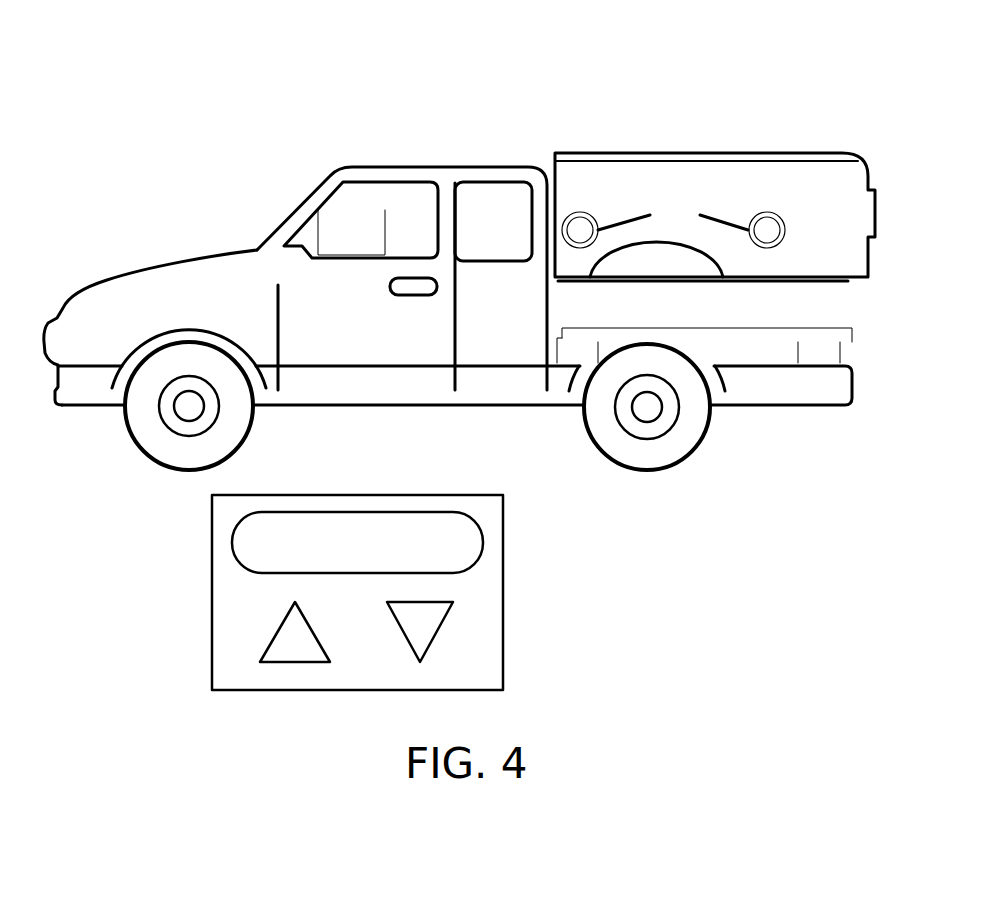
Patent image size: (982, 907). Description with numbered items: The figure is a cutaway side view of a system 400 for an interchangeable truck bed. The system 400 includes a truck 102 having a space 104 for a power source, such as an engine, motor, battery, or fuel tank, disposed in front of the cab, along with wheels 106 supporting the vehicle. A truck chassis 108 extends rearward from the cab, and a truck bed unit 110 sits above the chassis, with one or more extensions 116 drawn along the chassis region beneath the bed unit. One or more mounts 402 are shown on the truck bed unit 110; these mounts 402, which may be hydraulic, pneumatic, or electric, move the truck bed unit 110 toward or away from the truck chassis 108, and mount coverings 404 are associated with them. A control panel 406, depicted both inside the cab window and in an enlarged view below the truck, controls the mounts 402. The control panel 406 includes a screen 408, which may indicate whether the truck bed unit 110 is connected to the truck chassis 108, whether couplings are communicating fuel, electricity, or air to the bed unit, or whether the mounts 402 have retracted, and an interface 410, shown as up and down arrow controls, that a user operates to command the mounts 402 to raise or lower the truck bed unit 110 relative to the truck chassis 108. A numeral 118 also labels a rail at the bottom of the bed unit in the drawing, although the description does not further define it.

The system 400 is at (126, 68).
The mounts 402 is at (303, 93).
The mount coverings 404 is at (673, 214).
The control panel 406 is at (373, 210).
The screen 408 is at (232, 540).
The interface 410 is at (397, 620).
The truck 102 is at (474, 146).
The space for a power source 104 is at (102, 278).
The wheels 106 is at (658, 472).
The truck chassis 108 is at (768, 408).
The truck bed unit 110 is at (648, 153).
The extensions 116 is at (612, 328).
The rail 118 is at (807, 282).